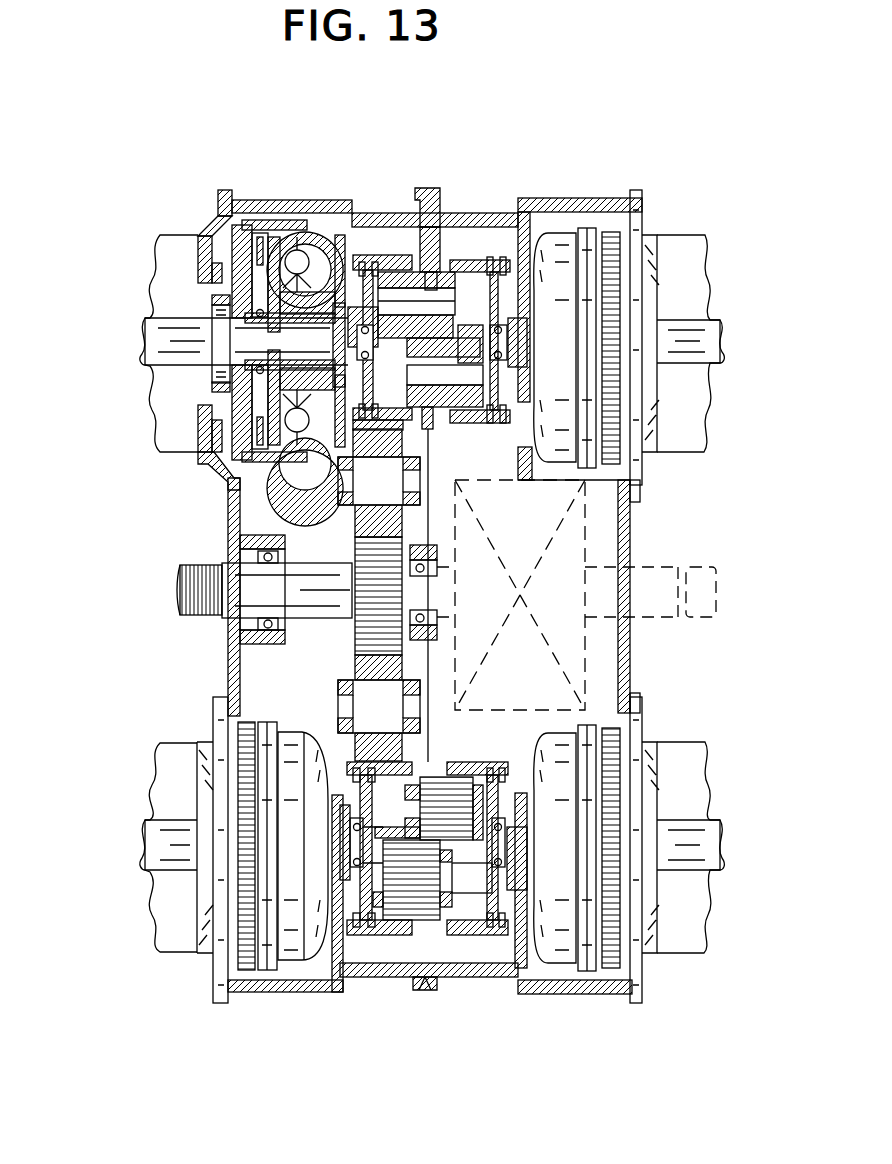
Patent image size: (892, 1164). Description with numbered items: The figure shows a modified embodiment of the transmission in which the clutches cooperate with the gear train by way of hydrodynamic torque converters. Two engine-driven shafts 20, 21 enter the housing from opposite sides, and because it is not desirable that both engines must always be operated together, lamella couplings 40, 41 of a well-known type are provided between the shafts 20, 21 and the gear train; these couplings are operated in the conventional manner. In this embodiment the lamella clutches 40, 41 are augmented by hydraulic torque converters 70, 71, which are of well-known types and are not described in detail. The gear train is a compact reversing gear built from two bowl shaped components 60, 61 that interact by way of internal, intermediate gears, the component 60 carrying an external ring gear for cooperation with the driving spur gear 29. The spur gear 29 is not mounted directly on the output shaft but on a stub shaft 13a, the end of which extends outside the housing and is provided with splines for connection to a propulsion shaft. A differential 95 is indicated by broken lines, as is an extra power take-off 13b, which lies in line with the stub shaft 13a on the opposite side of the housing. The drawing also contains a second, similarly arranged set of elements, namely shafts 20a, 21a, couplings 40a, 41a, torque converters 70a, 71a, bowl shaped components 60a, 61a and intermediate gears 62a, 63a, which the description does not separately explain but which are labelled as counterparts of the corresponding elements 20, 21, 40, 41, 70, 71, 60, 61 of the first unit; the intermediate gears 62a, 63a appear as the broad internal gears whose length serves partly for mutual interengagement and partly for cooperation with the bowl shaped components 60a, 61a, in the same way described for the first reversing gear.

The shaft 20 is at (170, 332).
The shaft 21 is at (712, 338).
The lamella coupling 40 is at (250, 198).
The hydraulic torque converter 70 is at (332, 192).
The bowl shaped component 60 is at (385, 213).
The bowl shaped component 61 is at (466, 213).
The hydraulic torque converter 71 is at (544, 229).
The lamella coupling 41 is at (592, 200).
The stub shaft 13a is at (312, 585).
The extra power take-off 13b is at (660, 580).
The differential 95 is at (530, 532).
The spur gear 29 is at (368, 623).
The lower differential flange plate 61a is at (478, 770).
The lower left axle shaft 20a is at (170, 856).
The lower right axle shaft 21a is at (712, 856).
The lower left wheel disc 40a is at (264, 972).
The lower left wheel tire 70a is at (324, 971).
The lower differential case 60a is at (380, 968).
The lower differential gear 62a is at (403, 930).
The lower differential pinion 63a is at (455, 880).
The lower right wheel tire 71a is at (544, 971).
The lower right wheel disc 41a is at (603, 972).